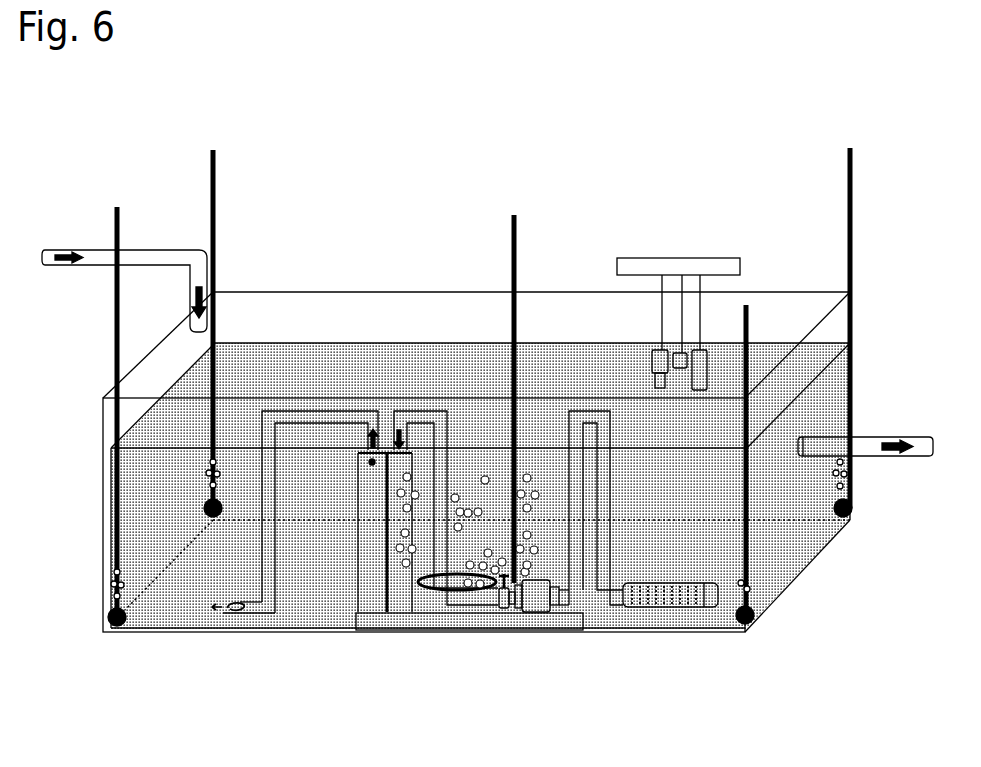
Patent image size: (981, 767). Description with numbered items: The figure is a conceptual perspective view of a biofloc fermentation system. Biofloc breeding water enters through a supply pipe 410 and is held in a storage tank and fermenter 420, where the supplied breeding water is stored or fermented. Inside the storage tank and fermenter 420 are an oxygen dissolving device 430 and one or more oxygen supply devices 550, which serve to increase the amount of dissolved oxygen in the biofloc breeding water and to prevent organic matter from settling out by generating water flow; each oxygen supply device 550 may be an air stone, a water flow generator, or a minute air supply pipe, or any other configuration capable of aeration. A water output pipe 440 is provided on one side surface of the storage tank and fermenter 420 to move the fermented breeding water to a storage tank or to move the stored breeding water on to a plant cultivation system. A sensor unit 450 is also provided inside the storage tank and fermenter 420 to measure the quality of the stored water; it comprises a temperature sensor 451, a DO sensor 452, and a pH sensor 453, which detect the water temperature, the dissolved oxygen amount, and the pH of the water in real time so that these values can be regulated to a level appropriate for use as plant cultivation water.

The supply pipe 410 is at (164, 252).
The storage tank and fermenter 420 is at (778, 593).
The oxygen dissolving device 430 is at (445, 623).
The water output pipe 440 is at (880, 452).
The sensor unit 450 is at (646, 264).
The temperature sensor 451 is at (655, 367).
The DO sensor 452 is at (677, 360).
The pH sensor 453 is at (700, 367).
The oxygen supply device 550 is at (213, 520).